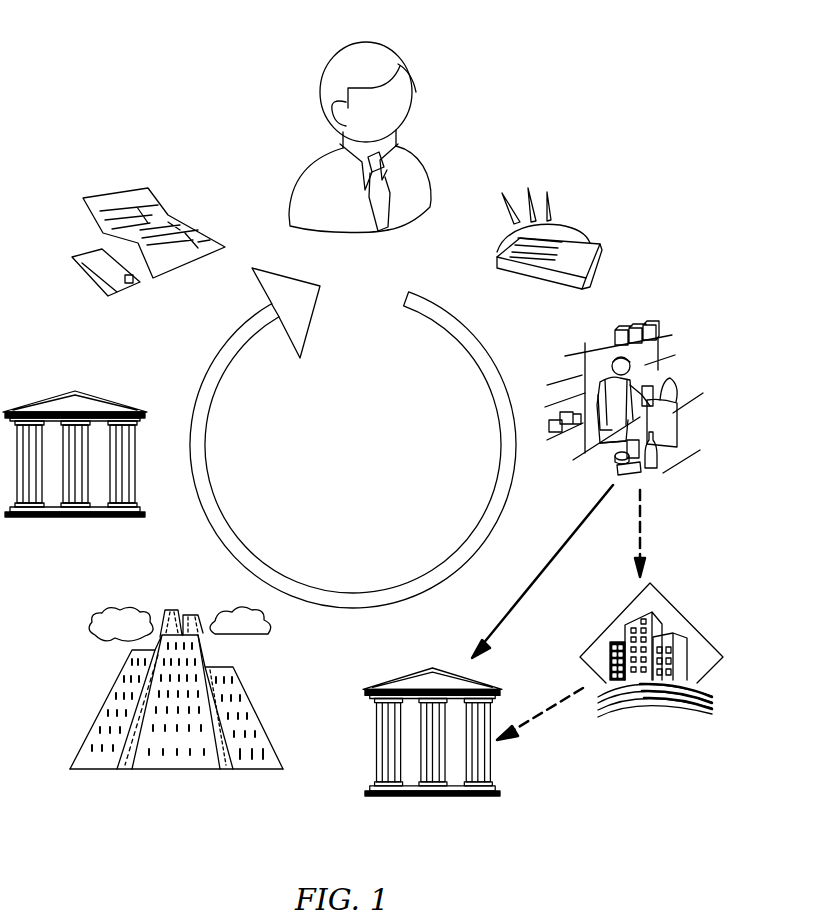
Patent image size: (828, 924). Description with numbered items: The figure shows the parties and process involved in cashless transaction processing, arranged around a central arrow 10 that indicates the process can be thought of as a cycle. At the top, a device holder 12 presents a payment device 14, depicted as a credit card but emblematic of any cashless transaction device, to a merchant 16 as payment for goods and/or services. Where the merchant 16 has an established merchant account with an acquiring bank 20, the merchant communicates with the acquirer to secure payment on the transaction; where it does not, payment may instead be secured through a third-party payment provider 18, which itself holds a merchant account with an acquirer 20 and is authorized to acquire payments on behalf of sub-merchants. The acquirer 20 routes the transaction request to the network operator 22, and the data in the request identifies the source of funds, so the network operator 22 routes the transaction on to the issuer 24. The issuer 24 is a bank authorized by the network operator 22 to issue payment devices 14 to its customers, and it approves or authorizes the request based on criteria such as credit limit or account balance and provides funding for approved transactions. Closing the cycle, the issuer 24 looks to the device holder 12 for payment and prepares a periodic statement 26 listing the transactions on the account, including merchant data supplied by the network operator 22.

The arrow 10 is at (353, 593).
The device holder 12 is at (366, 43).
The payment device 14 is at (587, 247).
The merchant 16 is at (645, 322).
The third-party payment provider 18 is at (641, 688).
The acquiring bank 20 is at (430, 798).
The network operator 22 is at (168, 770).
The issuer 24 is at (73, 520).
The periodic statement 26 is at (117, 192).